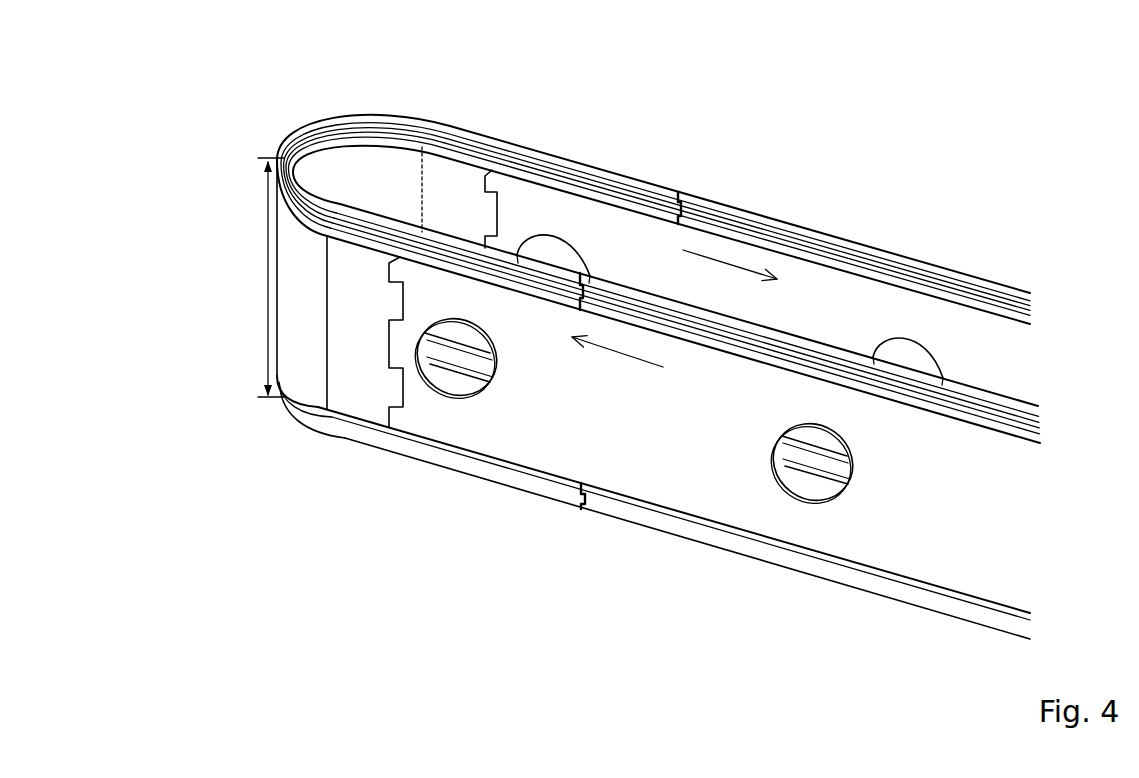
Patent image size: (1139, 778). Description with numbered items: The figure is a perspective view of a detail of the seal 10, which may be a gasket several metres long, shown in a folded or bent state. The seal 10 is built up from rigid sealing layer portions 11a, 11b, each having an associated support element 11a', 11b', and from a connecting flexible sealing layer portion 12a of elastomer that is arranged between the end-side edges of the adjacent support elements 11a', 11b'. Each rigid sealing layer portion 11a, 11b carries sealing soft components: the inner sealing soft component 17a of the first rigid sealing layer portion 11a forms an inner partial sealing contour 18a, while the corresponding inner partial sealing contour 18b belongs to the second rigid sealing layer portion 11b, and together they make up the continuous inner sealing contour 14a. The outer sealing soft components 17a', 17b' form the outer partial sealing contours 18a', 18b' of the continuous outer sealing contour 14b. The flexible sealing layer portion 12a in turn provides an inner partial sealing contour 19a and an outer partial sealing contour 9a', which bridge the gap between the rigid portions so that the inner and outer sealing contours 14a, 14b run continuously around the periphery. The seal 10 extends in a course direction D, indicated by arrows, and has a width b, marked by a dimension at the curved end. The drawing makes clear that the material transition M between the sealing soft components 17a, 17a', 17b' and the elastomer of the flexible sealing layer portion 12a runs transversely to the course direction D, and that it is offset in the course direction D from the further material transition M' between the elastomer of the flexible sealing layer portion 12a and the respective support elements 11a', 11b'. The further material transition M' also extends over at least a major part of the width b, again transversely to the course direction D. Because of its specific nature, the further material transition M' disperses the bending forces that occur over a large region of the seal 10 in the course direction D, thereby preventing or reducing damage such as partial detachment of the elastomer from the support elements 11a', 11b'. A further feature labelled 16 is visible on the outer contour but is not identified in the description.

The seal 10 is at (297, 92).
The rigid sealing layer portion 11a is at (674, 562).
The support element 11a' is at (687, 559).
The rigid sealing layer portion 11b is at (737, 225).
The support element 11b' is at (683, 299).
The flexible sealing layer portion 12a is at (674, 196).
The continuous inner sealing contour 14a is at (349, 443).
The continuous outer sealing contour 14b is at (483, 130).
The projection 16 is at (906, 352).
The inner sealing soft component 17a is at (607, 527).
The outer sealing soft component 17a' is at (583, 272).
The outer sealing soft component 17b' is at (723, 162).
The inner partial sealing contour 18a is at (793, 591).
The outer partial sealing contour 18a' is at (779, 316).
The inner partial sealing contour 18b is at (812, 357).
The outer partial sealing contour 18b' is at (759, 186).
The inner partial sealing contour 19a is at (450, 352).
The notch 9a' is at (508, 210).
The material transition M is at (631, 346).
The further material transition M' is at (463, 298).
The course direction D is at (718, 262).
The width b is at (267, 243).